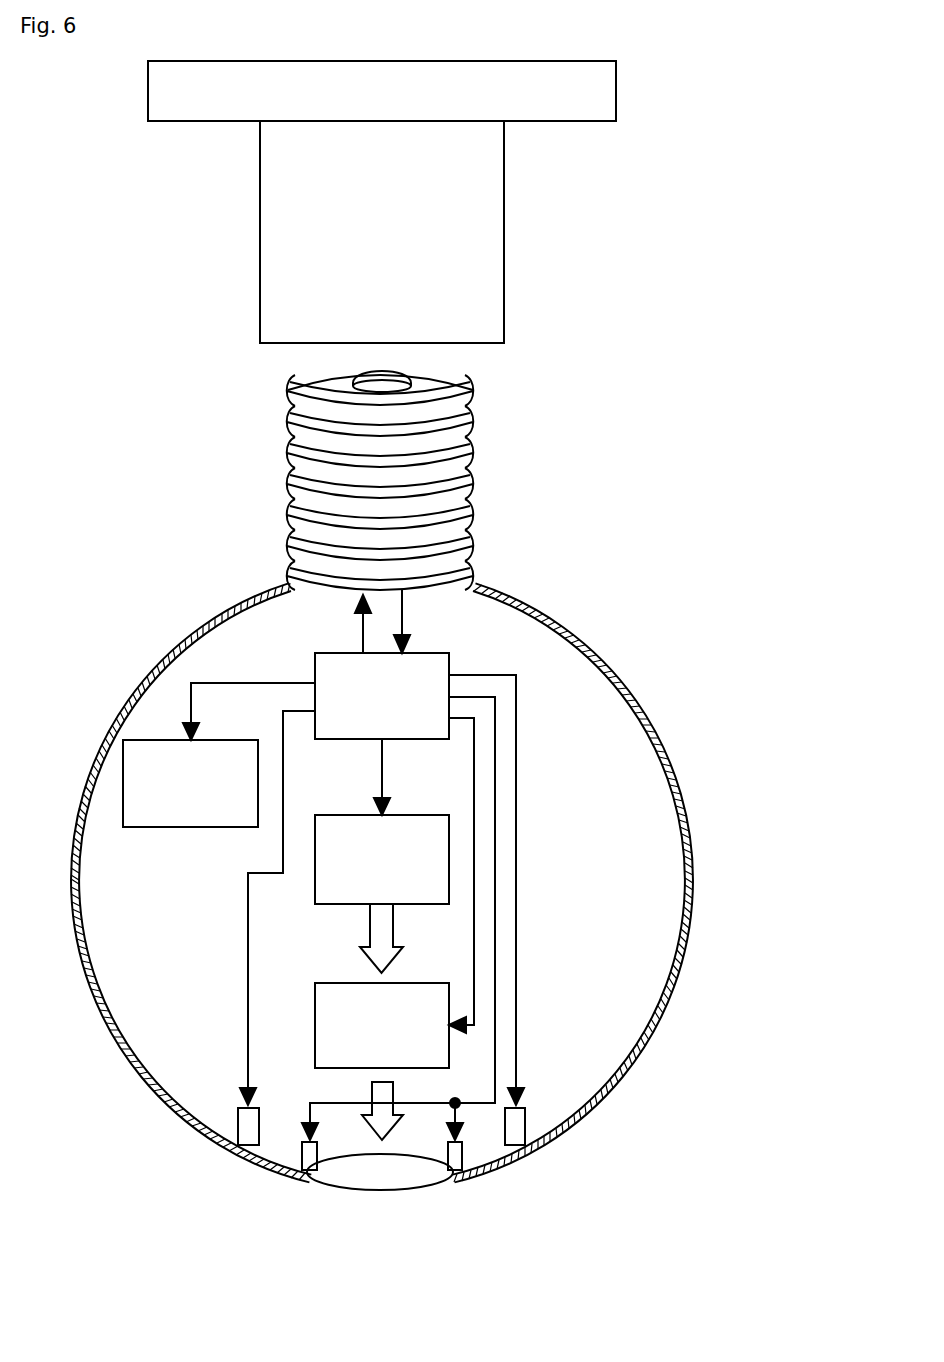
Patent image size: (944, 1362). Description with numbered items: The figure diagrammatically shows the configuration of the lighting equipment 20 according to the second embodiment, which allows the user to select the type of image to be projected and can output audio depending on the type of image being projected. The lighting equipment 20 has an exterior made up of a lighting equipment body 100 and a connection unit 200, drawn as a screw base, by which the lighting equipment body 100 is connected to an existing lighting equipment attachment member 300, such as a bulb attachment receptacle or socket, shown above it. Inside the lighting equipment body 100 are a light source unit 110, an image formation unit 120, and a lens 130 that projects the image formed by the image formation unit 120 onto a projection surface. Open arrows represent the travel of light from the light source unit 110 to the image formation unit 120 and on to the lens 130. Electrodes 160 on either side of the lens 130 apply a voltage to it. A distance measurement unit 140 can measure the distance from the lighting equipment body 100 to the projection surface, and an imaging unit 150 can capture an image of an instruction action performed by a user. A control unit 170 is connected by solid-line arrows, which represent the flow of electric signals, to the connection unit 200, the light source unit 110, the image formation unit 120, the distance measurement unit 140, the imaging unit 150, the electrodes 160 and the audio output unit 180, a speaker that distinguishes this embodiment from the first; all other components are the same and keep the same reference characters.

The lighting equipment 20 is at (91, 612).
The lighting equipment body 100 is at (634, 660).
The light source unit 110 is at (430, 815).
The image formation unit 120 is at (430, 983).
The lens 130 is at (413, 1178).
The distance measurement unit 140 is at (247, 1145).
The imaging unit 150 is at (513, 1145).
The electrodes 160 is at (303, 1170).
The control unit 170 is at (430, 653).
The audio output unit 180 is at (160, 827).
The connection unit 200 is at (290, 481).
The lighting equipment attachment member 300 is at (504, 238).